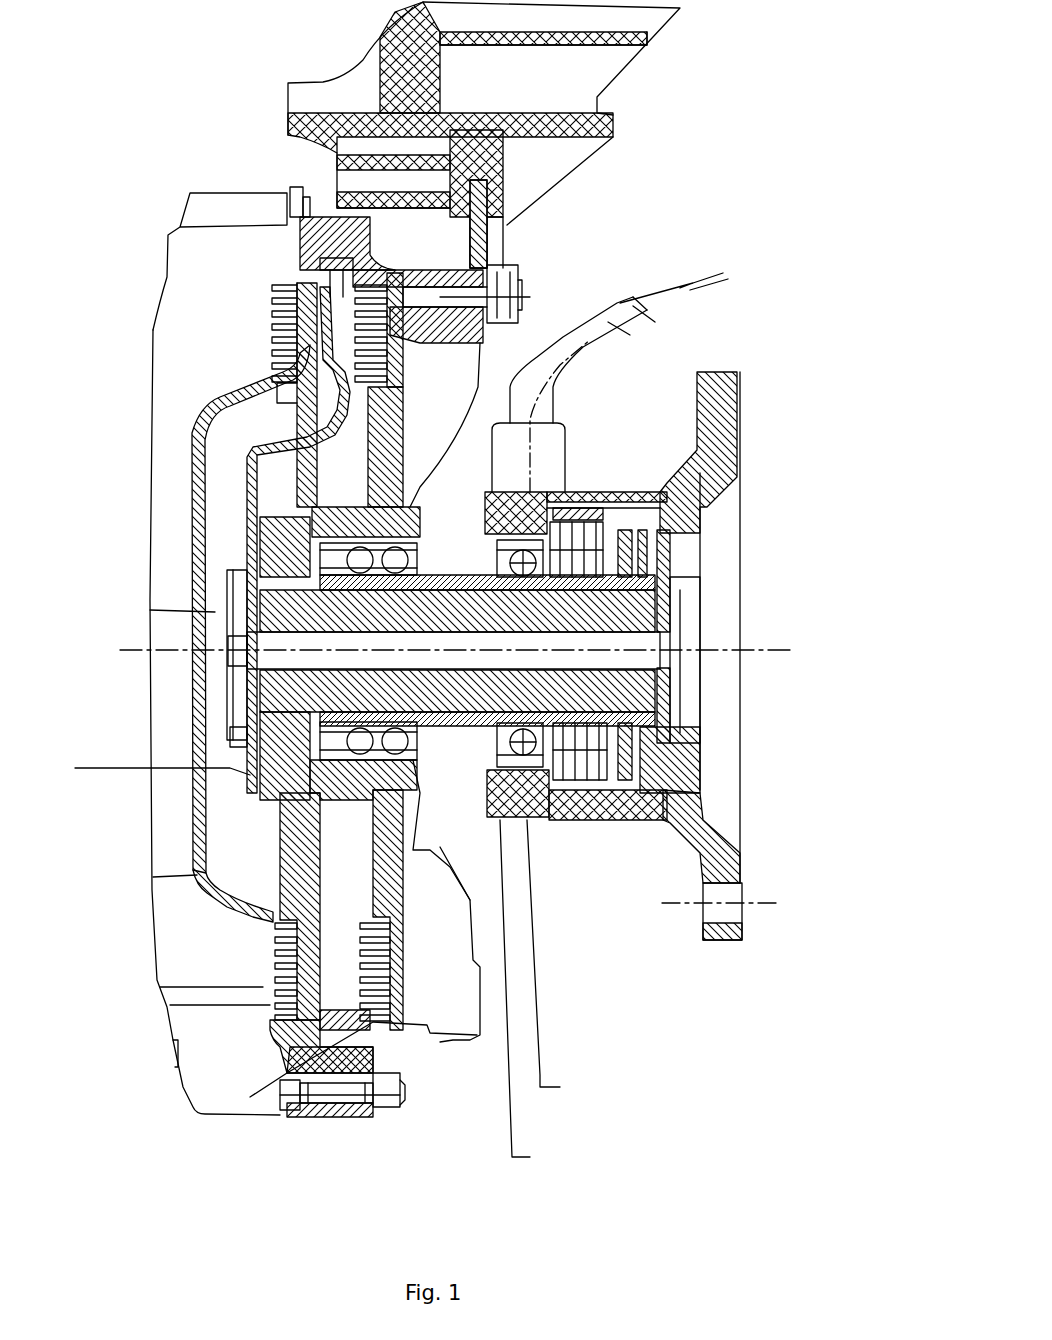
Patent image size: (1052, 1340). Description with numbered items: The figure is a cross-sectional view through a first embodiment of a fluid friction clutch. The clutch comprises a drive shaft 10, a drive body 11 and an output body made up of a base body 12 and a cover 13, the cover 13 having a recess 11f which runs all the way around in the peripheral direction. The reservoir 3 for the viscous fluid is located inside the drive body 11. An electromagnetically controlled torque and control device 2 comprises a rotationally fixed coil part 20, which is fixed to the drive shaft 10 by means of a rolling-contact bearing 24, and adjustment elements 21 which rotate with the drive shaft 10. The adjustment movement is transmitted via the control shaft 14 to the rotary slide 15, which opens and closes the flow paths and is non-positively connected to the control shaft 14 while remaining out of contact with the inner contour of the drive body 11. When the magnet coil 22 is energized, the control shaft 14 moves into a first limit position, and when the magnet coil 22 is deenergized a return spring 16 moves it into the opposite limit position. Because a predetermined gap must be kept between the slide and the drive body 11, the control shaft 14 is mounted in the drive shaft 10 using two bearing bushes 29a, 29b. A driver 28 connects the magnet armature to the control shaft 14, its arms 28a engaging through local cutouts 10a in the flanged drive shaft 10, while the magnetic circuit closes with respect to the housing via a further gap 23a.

The electromagnetically controlled torque and control device 2 is at (603, 893).
The reservoir 3 is at (340, 993).
The drive shaft 10 is at (673, 707).
The local cutouts 10a is at (667, 532).
The drive body 11 is at (300, 270).
The recess 11f is at (250, 1097).
The base body 12 is at (507, 267).
The cover 13 is at (240, 497).
The control shaft 14 is at (627, 660).
The rotary slide 15 is at (200, 408).
The return spring 16 is at (235, 712).
The coil part 20 is at (573, 443).
The adjustment elements 21 is at (676, 566).
The magnet coil 22 is at (580, 820).
The gap 23a is at (537, 995).
The rolling-contact bearing 24 is at (559, 960).
The driver 28 is at (665, 540).
The arms 28a is at (713, 473).
The bearing bush 29a is at (251, 622).
The bearing bush 29b is at (647, 630).